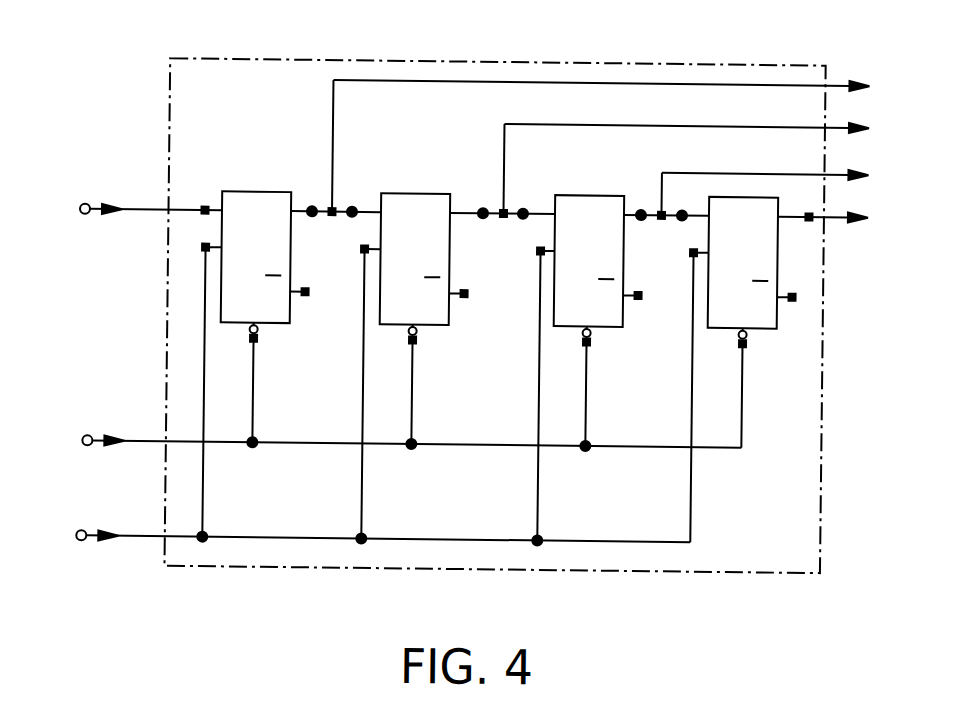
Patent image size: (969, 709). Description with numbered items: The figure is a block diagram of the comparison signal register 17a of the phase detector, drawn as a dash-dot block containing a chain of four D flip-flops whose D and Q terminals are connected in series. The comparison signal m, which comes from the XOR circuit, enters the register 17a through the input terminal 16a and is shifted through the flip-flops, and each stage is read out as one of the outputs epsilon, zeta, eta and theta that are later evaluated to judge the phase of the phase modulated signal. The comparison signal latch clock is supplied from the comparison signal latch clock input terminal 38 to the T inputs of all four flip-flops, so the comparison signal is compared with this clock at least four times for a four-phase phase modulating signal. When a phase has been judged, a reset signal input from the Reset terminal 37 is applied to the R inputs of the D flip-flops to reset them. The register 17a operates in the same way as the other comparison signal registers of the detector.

The data input terminal (m) 16a is at (83, 208).
The comparison signal register 17a is at (677, 60).
The Reset terminal 37 is at (88, 440).
The comparison signal latch clock input terminal 38 is at (85, 535).